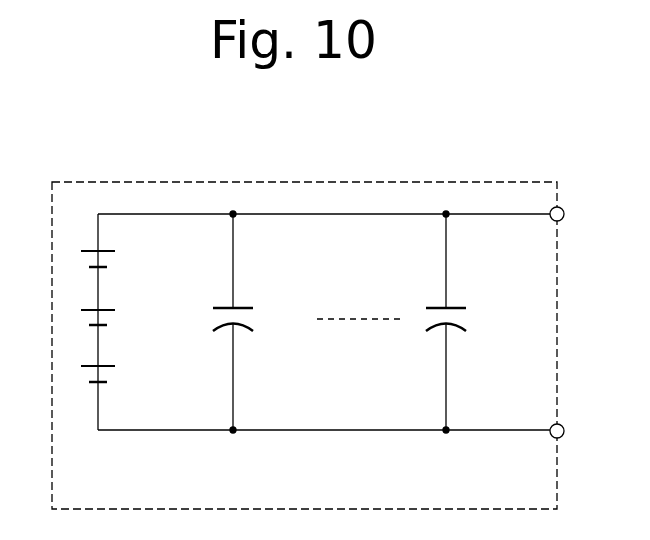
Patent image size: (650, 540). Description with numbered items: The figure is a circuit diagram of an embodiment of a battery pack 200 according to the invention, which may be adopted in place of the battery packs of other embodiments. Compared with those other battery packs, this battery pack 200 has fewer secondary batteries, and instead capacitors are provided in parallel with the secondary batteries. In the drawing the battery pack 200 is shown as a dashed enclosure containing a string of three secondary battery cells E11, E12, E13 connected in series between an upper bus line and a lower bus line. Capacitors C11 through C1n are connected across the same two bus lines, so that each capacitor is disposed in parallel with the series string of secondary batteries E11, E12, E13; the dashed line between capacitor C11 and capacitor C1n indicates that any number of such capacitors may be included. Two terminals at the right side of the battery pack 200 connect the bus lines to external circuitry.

The battery pack 200 is at (247, 178).
The battery cell E11 is at (121, 252).
The battery cell E12 is at (121, 317).
The battery cell E13 is at (121, 387).
The capacitor C11 is at (256, 322).
The capacitor C1n is at (469, 322).